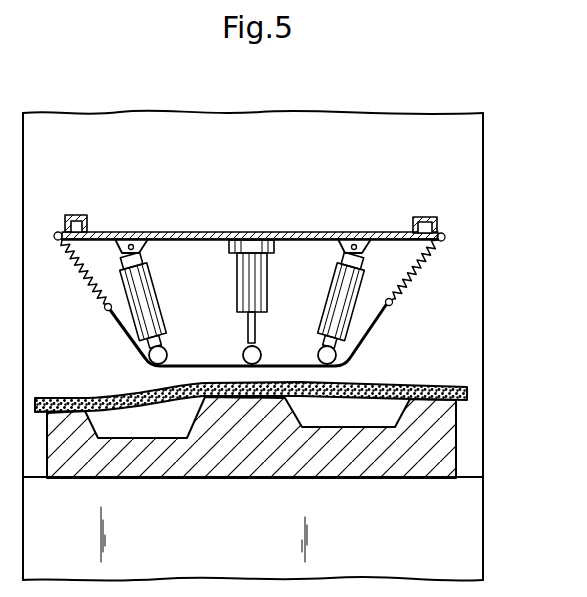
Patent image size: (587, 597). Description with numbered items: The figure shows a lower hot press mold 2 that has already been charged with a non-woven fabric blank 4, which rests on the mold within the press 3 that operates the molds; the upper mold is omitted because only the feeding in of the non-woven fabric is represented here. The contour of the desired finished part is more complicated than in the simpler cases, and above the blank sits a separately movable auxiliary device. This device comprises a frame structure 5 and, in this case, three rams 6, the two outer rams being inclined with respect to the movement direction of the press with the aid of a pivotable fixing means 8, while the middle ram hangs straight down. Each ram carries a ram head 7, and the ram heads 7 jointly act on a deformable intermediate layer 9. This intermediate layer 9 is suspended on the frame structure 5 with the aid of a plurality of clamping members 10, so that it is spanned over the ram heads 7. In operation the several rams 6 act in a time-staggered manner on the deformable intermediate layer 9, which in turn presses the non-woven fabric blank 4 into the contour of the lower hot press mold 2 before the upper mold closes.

The lower hot press mold 2 is at (435, 452).
The press 3 is at (463, 148).
The non-woven fabric blank 4 is at (423, 385).
The frame structure 5 is at (435, 215).
The rams 6 is at (157, 302).
The ram heads 7 is at (164, 352).
The pivotable fixing means 8 is at (128, 247).
The deformable intermediate layer 9 is at (358, 345).
The clamping members 10 is at (82, 277).